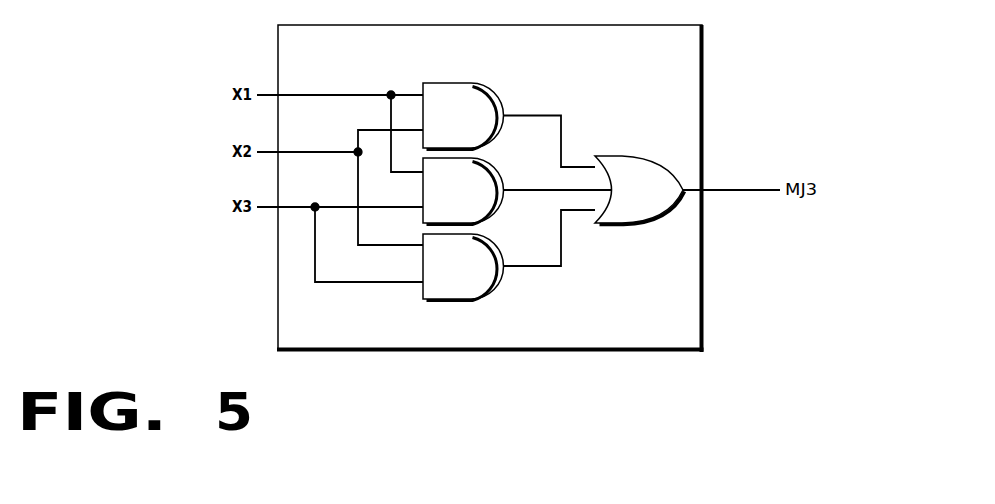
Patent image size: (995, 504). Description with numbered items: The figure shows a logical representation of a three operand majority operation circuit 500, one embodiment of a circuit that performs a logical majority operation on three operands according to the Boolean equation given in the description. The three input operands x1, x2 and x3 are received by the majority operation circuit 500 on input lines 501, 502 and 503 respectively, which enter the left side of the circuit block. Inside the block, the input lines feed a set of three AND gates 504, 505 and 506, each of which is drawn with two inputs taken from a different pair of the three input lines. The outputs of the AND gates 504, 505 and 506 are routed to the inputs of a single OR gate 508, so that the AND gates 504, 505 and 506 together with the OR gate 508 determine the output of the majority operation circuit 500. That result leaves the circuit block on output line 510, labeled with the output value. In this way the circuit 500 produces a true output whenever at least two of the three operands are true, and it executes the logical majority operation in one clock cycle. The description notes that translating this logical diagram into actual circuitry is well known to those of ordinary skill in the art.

The three operand majority operation circuit 500 is at (742, 51).
The input line 501 is at (335, 93).
The input line 502 is at (335, 150).
The input line 503 is at (335, 205).
The AND gate 504 is at (468, 143).
The AND gate 505 is at (468, 218).
The AND gate 506 is at (468, 293).
The OR gate 508 is at (640, 216).
The output line 510 is at (757, 188).